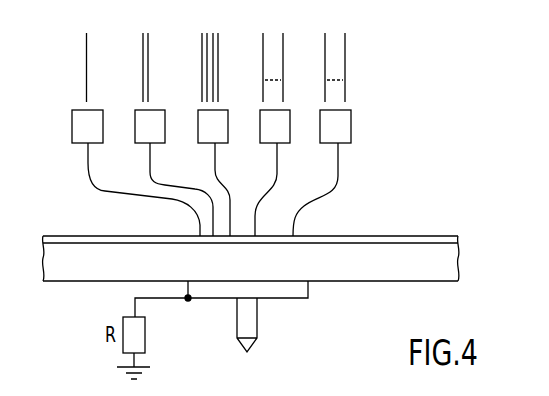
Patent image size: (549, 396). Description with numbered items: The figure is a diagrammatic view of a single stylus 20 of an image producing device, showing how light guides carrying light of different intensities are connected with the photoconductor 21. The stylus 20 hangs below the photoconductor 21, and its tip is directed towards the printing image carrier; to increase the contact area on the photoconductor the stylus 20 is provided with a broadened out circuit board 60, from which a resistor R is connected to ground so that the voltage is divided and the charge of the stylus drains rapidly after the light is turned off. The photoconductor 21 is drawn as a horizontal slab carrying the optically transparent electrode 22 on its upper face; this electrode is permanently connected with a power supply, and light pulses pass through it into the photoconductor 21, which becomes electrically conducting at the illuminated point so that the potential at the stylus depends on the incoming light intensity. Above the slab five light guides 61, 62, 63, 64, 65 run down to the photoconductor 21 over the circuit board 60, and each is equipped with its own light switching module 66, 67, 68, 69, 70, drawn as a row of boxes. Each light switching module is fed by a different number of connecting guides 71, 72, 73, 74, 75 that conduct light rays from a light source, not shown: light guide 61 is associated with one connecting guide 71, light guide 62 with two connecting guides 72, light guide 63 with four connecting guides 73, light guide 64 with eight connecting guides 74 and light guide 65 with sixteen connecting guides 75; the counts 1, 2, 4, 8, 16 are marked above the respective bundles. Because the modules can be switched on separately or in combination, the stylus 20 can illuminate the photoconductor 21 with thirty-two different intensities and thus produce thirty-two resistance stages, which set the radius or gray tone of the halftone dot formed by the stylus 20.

The single signal line 1 is at (86, 86).
The two-line signal bus 2 is at (143, 86).
The four-line signal bus 4 is at (202, 86).
The eight-line signal bus 8 is at (263, 95).
The sixteen-line signal bus 16 is at (325, 95).
The stylus 20 is at (253, 324).
The photoconductor 21 is at (456, 262).
The optically transparent electrode 22 is at (437, 237).
The broadened out circuit board 60 is at (309, 290).
The light guide 61 is at (102, 193).
The light guide 62 is at (162, 188).
The light guide 63 is at (219, 186).
The light guide 64 is at (267, 201).
The light guide 65 is at (328, 199).
The light switching module 66 is at (76, 144).
The light switching module 67 is at (139, 144).
The light switching module 68 is at (201, 144).
The light switching module 69 is at (263, 144).
The light switching module 70 is at (324, 144).
The connecting guide 71 is at (72, 55).
The connecting guides 72 is at (129, 55).
The connecting guides 73 is at (192, 55).
The connecting guides 74 is at (259, 55).
The connecting guides 75 is at (319, 55).